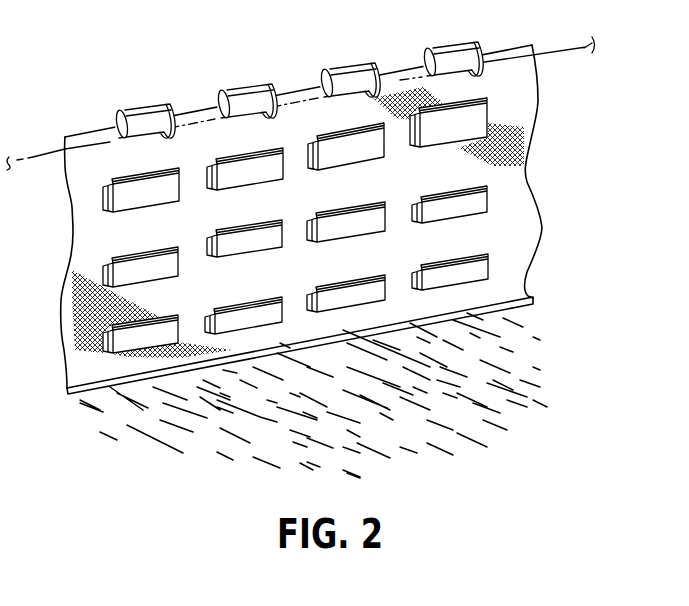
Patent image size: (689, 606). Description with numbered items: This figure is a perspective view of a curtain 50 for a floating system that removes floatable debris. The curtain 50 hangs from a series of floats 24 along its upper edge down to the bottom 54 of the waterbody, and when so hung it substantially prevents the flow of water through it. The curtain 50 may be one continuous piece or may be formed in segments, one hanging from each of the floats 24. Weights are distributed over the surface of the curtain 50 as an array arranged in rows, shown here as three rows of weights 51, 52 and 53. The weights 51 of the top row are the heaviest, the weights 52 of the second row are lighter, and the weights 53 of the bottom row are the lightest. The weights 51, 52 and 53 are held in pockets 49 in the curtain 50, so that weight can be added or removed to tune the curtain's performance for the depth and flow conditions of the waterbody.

The floats 24 is at (230, 100).
The pockets 49 is at (488, 114).
The curtain 50 is at (309, 212).
The weights of the top row 51 is at (228, 158).
The weights of the second row 52 is at (235, 231).
The weights of the bottom row 53 is at (338, 288).
The bottom of the waterbody 54 is at (374, 440).